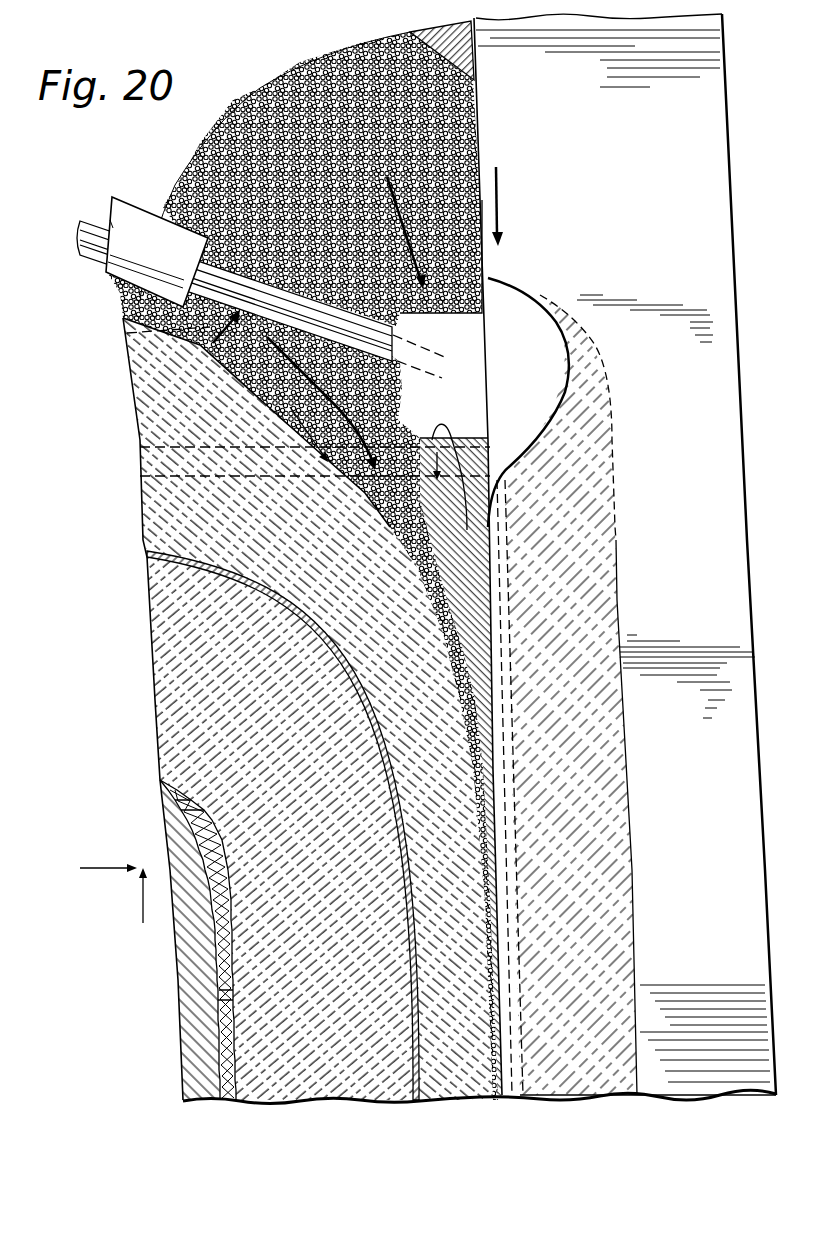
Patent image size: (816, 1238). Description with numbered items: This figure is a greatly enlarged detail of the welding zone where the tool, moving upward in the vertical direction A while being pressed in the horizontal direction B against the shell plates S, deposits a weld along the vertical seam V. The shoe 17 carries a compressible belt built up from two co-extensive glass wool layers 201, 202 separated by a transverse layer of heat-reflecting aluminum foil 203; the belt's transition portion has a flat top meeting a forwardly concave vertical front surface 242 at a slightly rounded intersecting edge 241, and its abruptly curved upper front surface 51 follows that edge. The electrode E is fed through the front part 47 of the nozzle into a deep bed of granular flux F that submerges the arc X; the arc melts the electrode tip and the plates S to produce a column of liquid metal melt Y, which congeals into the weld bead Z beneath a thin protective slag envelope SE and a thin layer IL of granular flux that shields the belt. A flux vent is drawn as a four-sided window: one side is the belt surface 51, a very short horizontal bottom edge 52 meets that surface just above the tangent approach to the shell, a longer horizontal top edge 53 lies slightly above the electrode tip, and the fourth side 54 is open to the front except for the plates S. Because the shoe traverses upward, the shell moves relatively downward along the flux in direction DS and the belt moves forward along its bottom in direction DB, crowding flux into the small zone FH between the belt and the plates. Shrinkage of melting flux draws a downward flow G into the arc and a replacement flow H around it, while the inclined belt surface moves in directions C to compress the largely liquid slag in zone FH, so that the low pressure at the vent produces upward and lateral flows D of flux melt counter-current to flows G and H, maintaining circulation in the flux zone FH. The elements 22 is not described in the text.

The shoe 17 is at (193, 1098).
The braided liner strip 22 is at (230, 962).
The front part of nozzle 47 is at (133, 212).
The upper front surface of belt 51 is at (200, 340).
The bottom edge of vent 52 is at (465, 437).
The top edge of vent 53 is at (427, 317).
The open front side of vent 54 is at (440, 343).
The glass wool layer 201 is at (322, 1098).
The glass wool layer 202 is at (456, 1092).
The aluminum foil layer 203 is at (417, 1100).
The intersecting edge 241 is at (203, 814).
The front surface of transition portion 242 is at (233, 998).
The electrode E is at (88, 228).
The flux F is at (247, 104).
The downward flux flow G is at (399, 233).
The flux flow around arc H is at (312, 401).
The direction of belt surface motion C is at (225, 324).
The upward and lateral flows of flux melt D is at (444, 476).
The direction of shell motion DS is at (511, 205).
The direction of belt motion DB is at (288, 434).
The arc X is at (510, 383).
The liquid metal melt Y is at (557, 546).
The vertical seam V is at (730, 545).
The flux zone FH is at (480, 552).
The flux layer IL is at (494, 1098).
The slag envelope SE is at (503, 1095).
The weld bead Z is at (587, 1083).
The shell plates S is at (703, 1095).
The vertical direction A is at (137, 905).
The horizontal direction B is at (106, 856).